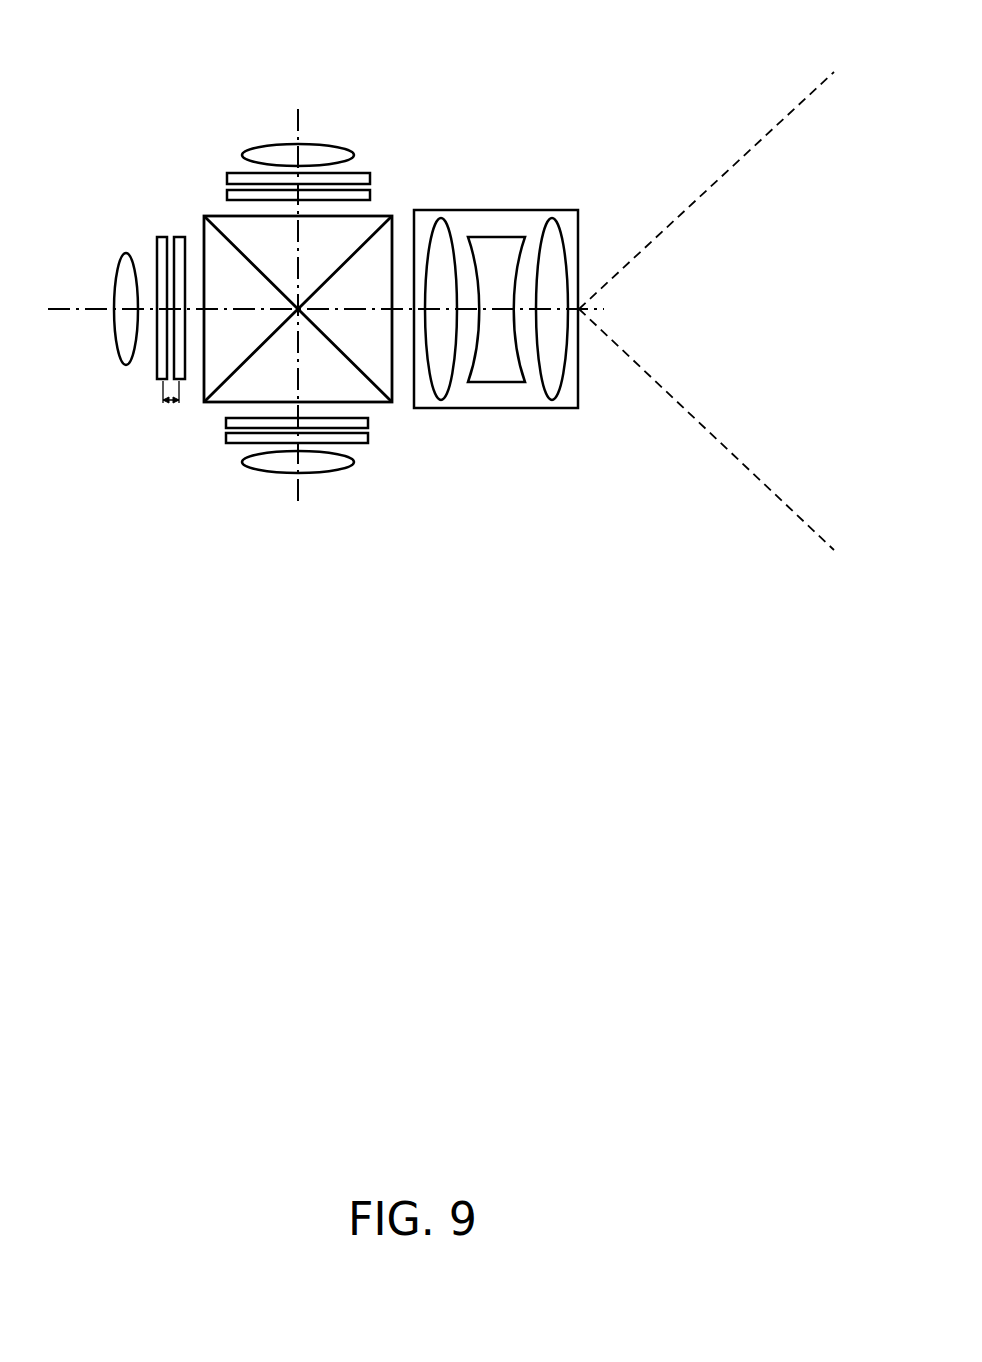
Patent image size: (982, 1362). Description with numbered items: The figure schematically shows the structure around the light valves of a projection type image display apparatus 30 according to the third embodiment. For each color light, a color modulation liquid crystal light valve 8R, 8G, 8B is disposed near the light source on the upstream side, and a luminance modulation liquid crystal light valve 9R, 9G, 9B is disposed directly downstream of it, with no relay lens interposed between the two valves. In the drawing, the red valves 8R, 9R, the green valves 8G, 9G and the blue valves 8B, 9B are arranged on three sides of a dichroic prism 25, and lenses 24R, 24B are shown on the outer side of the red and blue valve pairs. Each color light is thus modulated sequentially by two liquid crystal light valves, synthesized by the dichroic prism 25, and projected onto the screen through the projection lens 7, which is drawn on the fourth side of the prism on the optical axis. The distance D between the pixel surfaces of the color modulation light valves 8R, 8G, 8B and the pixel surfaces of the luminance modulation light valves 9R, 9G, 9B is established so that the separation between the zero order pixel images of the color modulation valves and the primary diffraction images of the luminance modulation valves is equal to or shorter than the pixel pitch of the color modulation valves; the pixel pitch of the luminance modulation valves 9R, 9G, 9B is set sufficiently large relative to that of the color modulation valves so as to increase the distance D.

The projection type image display apparatus 30 is at (240, 112).
The red light condenser lens 24R is at (120, 282).
The blue light condenser lens 24B is at (318, 153).
The color modulation liquid crystal light valve 8G is at (162, 238).
The luminance modulation liquid crystal light valve 9G is at (182, 238).
The color modulation liquid crystal light valve 8B is at (358, 178).
The luminance modulation liquid crystal light valve 9B is at (363, 195).
The color modulation liquid crystal light valve 8R is at (228, 437).
The luminance modulation liquid crystal light valve 9R is at (230, 420).
The dichroic prism 25 is at (367, 394).
The projection lens 7 is at (565, 213).
The distance D is at (172, 408).